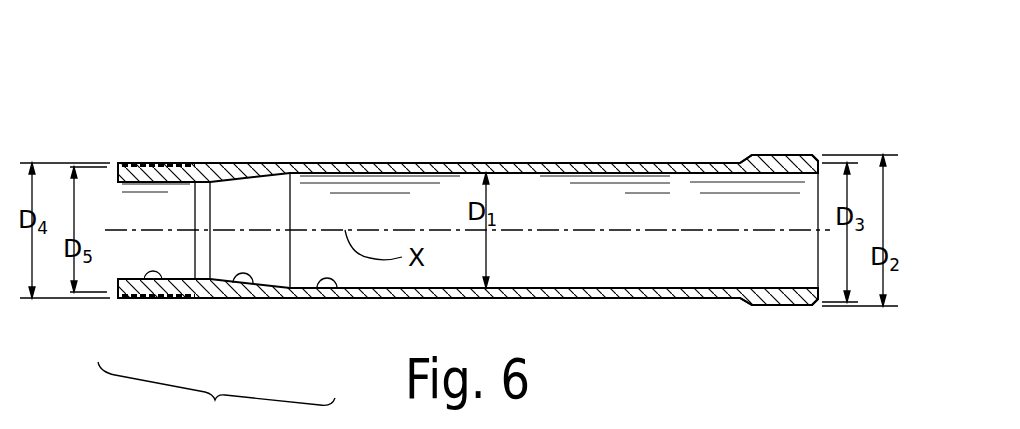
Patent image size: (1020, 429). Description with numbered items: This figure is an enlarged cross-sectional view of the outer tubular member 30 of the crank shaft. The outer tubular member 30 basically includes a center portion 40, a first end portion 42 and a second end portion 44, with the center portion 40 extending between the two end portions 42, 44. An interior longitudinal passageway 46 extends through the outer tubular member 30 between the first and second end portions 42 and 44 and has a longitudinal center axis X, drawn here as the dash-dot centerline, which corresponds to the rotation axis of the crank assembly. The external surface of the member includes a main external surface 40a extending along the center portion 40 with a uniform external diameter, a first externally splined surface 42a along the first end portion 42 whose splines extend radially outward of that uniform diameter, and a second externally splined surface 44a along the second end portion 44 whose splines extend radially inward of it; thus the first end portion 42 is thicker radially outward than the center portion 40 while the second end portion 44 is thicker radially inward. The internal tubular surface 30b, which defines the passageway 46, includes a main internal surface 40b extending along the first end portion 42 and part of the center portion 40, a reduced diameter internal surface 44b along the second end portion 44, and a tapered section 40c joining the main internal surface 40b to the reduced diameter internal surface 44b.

The outer tubular member 30 is at (479, 224).
The internal tubular surface 30b is at (216, 395).
The center portion 40 is at (417, 163).
The main external surface 40a is at (468, 163).
The main internal surface 40b is at (320, 299).
The tapered section 40c is at (243, 297).
The first end portion 42 is at (795, 155).
The first externally splined surface 42a is at (777, 155).
The second end portion 44 is at (157, 162).
The second externally splined surface 44a is at (143, 162).
The reduced diameter internal surface 44b is at (145, 297).
The interior longitudinal passageway 46 is at (570, 273).